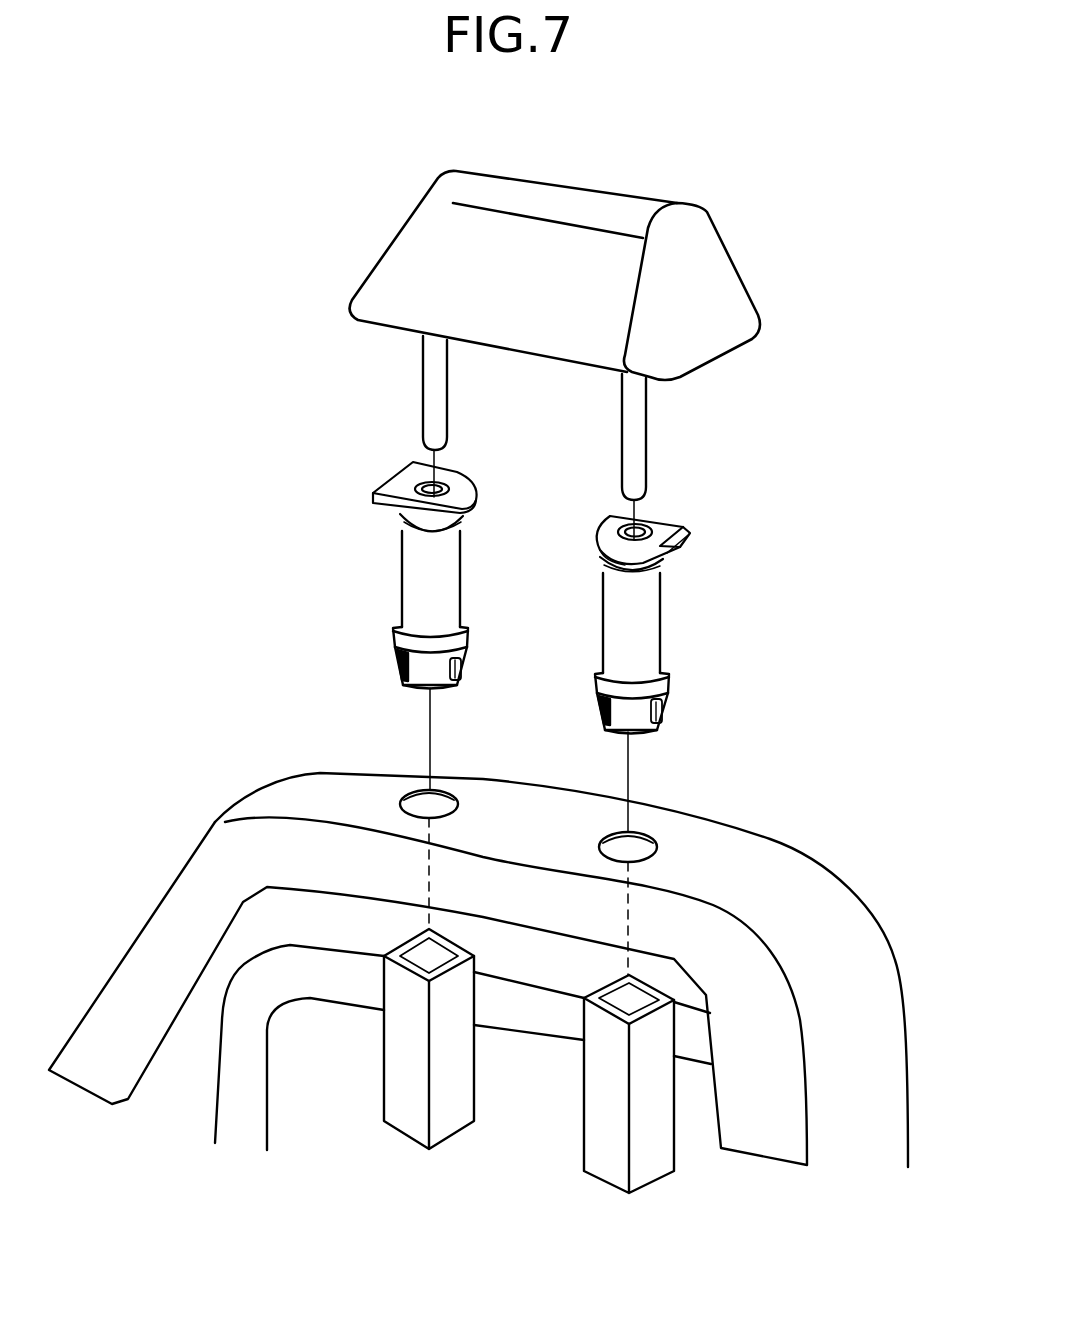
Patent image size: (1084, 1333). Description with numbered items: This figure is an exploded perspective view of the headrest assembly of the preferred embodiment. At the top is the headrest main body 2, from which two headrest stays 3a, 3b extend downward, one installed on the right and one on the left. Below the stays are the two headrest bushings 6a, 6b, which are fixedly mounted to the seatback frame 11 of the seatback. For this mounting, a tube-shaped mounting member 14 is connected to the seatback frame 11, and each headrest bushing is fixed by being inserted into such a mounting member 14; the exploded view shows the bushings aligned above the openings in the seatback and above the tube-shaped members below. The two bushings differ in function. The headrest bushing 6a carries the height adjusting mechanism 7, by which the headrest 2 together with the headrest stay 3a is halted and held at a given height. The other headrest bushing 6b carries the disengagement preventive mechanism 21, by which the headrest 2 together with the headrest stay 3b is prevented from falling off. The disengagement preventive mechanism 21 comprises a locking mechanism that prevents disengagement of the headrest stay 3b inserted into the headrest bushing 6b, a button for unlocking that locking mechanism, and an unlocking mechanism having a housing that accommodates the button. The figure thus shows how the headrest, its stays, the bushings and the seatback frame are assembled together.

The headrest main body 2 is at (419, 245).
The headrest stay 3a is at (640, 430).
The headrest stay 3b is at (430, 383).
The disengagement preventive mechanism 21 is at (396, 486).
The height adjusting mechanism 7 is at (668, 532).
The headrest bushing 6a is at (670, 703).
The headrest bushing 6b is at (393, 658).
The seatback frame 11 is at (515, 1017).
The mounting member 14 is at (408, 1092).